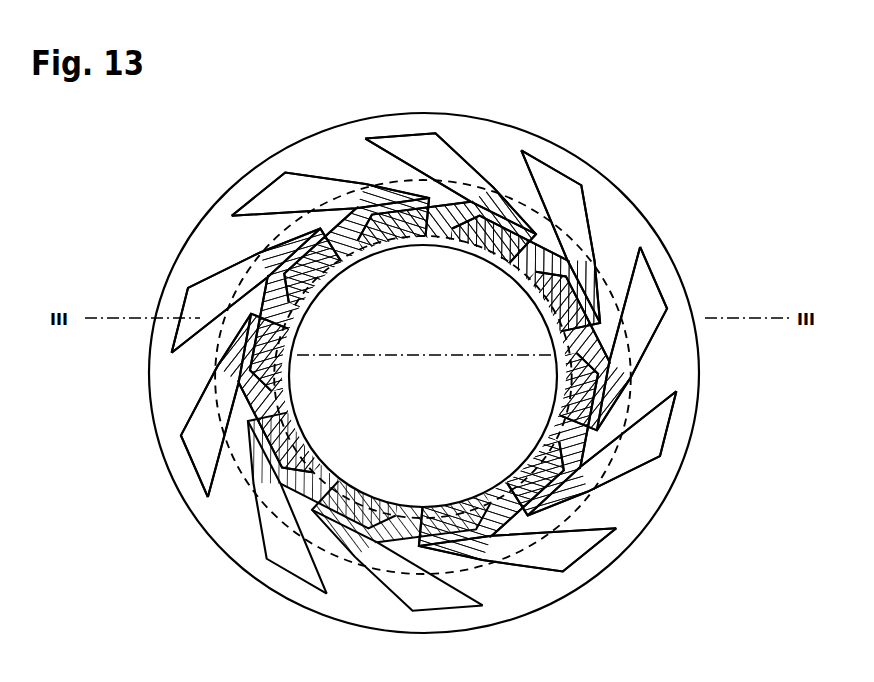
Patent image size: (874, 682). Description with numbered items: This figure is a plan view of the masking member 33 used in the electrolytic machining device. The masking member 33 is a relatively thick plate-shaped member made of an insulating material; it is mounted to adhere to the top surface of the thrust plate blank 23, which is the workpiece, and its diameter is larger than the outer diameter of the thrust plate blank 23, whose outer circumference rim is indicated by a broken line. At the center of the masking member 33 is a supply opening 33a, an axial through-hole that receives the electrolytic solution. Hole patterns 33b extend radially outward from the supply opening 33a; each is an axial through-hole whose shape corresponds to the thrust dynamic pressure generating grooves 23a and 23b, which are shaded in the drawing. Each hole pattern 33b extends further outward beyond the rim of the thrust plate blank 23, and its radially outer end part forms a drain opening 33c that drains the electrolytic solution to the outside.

The thrust dynamic pressure generating groove 23a is at (405, 185).
The thrust dynamic pressure generating groove 23b is at (478, 180).
The thrust plate blank 23 is at (527, 150).
The masking member 33 is at (704, 316).
The supply opening 33a is at (454, 387).
The hole pattern 33b is at (207, 403).
The drain opening 33c is at (175, 350).